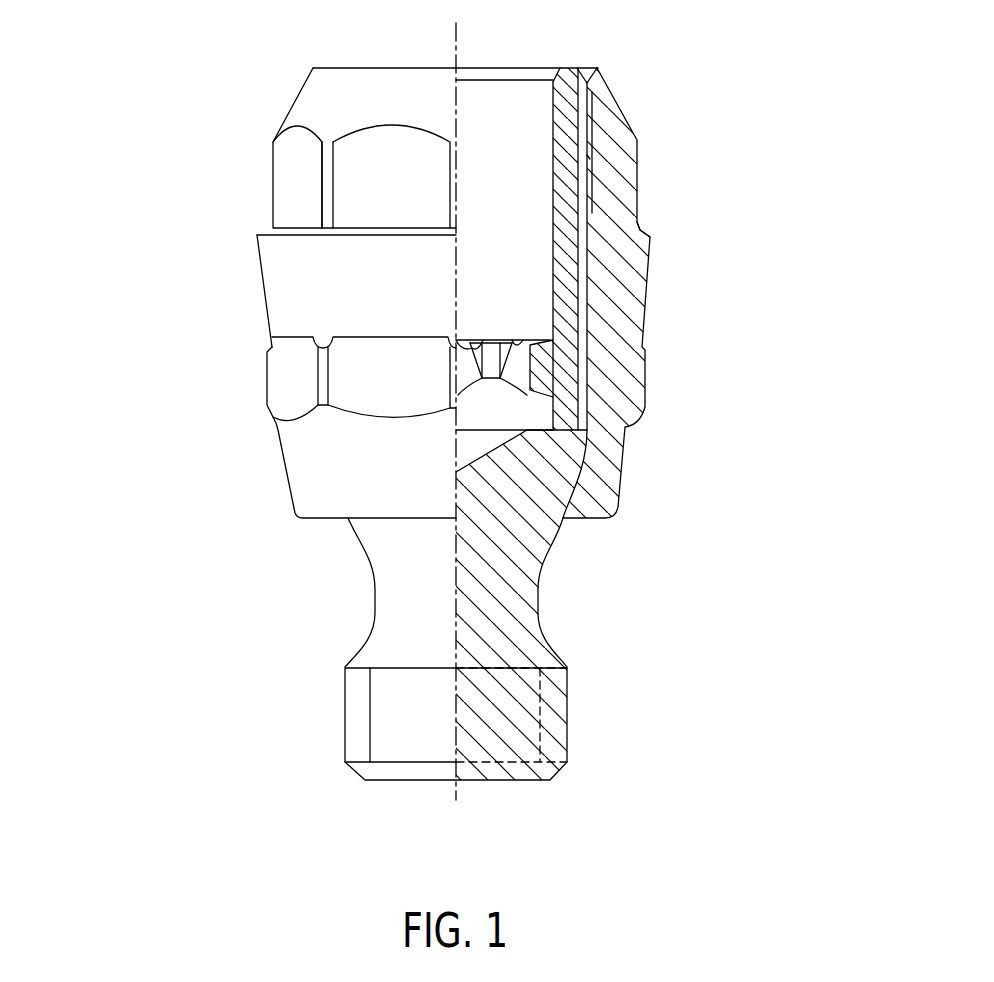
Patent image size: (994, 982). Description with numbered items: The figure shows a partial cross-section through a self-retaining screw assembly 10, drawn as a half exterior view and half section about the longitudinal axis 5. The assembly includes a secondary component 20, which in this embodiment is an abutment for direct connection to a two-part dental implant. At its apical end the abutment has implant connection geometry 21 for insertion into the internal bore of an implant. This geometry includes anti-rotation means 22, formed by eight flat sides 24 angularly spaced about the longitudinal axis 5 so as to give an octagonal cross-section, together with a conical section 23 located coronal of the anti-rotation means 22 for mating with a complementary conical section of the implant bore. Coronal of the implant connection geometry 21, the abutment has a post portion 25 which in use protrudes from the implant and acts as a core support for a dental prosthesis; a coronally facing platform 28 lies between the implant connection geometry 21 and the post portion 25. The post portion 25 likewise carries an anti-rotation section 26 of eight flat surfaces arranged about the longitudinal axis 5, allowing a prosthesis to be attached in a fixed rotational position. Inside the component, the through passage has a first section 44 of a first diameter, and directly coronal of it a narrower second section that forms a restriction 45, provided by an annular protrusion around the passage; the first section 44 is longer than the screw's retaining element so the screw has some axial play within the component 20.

The longitudinal axis 5 is at (456, 40).
The self-retaining screw assembly 10 is at (246, 617).
The secondary component 20 is at (647, 302).
The implant connection geometry 21 is at (298, 518).
The anti-rotation means 22 is at (272, 339).
The conical section 23 is at (260, 285).
The flat sides 24 is at (388, 393).
The post portion 25 is at (313, 68).
The anti-rotation section 26 is at (273, 145).
The coronally facing platform 28 is at (653, 237).
The first section 44 is at (592, 90).
The restriction 45 is at (590, 81).